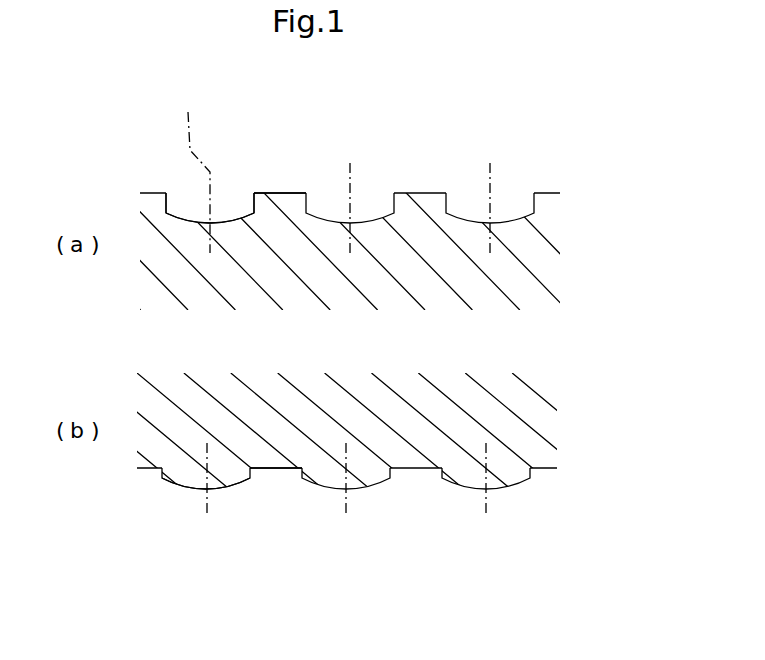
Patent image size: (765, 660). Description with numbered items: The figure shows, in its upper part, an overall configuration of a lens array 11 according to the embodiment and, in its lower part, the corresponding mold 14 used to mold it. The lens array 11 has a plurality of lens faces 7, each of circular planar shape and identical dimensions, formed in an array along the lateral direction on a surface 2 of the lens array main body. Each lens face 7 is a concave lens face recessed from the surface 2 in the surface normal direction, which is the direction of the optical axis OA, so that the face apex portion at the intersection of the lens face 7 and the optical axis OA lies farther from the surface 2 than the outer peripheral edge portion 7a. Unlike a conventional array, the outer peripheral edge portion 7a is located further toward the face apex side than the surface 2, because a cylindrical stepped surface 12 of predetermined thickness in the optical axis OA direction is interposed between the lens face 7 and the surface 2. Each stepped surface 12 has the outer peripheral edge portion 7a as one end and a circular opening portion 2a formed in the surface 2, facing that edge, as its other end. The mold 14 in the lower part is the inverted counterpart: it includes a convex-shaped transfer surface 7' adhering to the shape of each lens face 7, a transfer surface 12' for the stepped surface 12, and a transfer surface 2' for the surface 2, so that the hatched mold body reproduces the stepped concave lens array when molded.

The surface 2 is at (324, 167).
The circular opening portion 2a is at (170, 193).
The lens face 7 is at (206, 170).
The outer peripheral edge portion 7a is at (253, 211).
The optical axis OA is at (188, 170).
The lens array 11 is at (473, 123).
The cylindrical stepped surface 12 is at (225, 151).
The mold 14 is at (435, 575).
The convex-shaped transfer surface 7' is at (199, 537).
The transfer surface of the stepped surface 12' is at (217, 523).
The transfer surface of the surface 2' is at (320, 514).